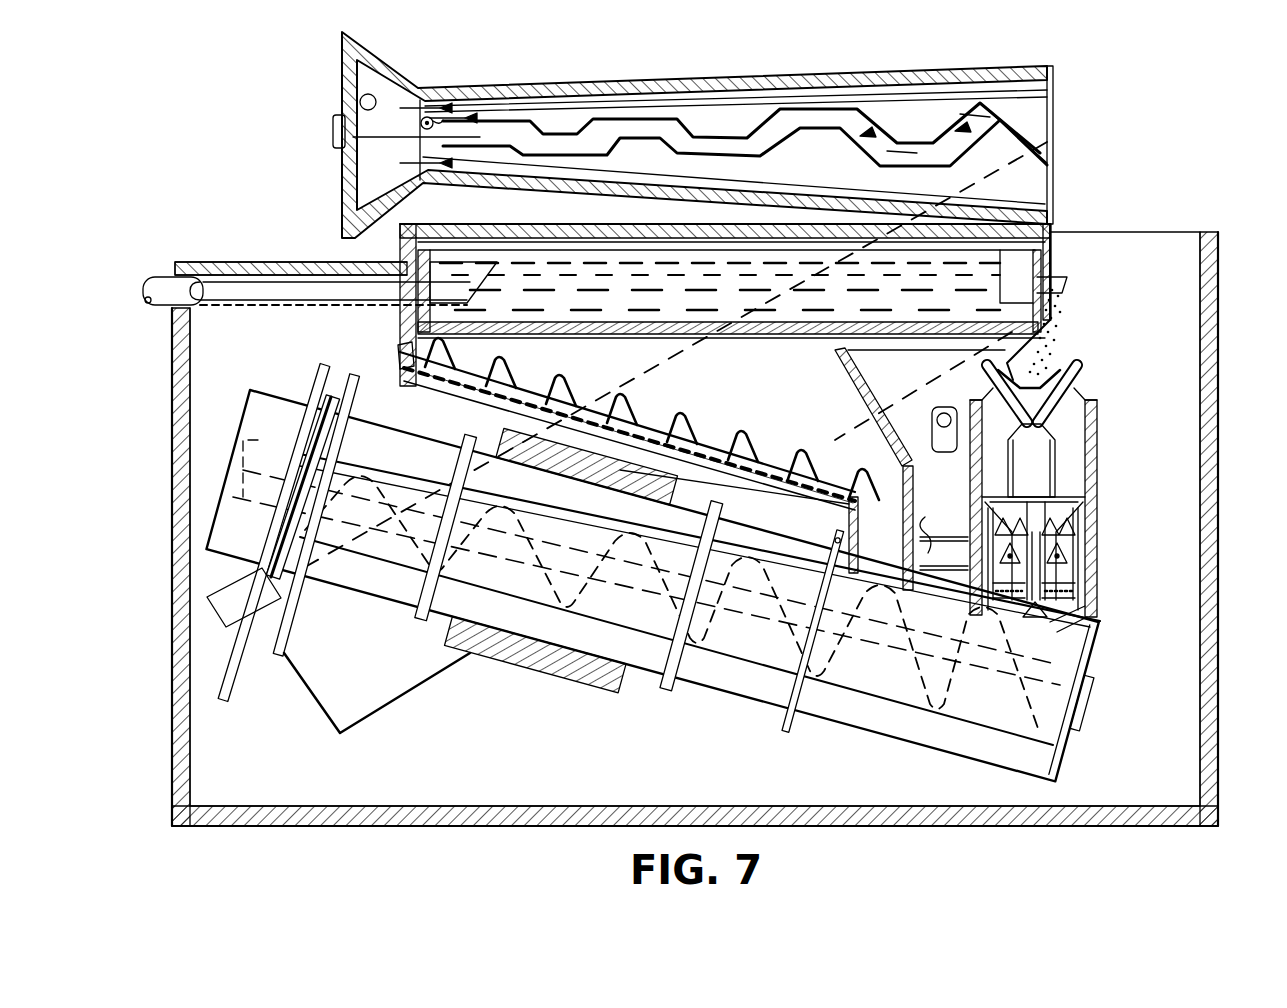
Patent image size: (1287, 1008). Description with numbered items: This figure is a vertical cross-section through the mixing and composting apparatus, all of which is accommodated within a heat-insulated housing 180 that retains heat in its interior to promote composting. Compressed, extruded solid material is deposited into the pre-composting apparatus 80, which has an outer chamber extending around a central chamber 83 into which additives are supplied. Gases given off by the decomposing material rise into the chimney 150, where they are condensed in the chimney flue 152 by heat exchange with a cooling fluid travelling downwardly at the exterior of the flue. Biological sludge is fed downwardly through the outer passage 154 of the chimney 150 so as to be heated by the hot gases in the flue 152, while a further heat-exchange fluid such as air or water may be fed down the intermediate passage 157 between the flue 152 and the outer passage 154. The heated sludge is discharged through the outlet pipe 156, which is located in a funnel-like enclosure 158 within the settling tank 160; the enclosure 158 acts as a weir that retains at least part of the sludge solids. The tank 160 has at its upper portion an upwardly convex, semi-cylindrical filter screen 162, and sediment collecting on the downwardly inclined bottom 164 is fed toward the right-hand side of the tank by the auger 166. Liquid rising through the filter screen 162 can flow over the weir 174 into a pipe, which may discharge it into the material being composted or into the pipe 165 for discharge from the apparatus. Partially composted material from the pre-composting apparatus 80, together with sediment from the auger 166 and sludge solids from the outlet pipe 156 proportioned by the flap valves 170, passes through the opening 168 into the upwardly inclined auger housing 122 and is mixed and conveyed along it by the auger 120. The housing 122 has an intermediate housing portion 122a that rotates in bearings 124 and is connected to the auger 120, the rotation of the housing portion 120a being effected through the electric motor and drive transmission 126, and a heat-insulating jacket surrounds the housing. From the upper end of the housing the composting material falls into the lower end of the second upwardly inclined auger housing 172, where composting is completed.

The pre-composting apparatus 80 is at (1071, 498).
The central chamber 83 is at (1043, 478).
The auger 120 is at (685, 587).
The housing portion 120a is at (720, 680).
The auger housing 122 is at (937, 737).
The intermediate housing portion 122a is at (493, 447).
The bearings 124 is at (430, 622).
The electric motor and drive transmission 126 is at (220, 707).
The chimney 150 is at (693, 134).
The chimney flue 152 is at (833, 115).
The outer passage 154 is at (535, 97).
The outlet pipe 156 is at (947, 407).
The intermediate passage 157 is at (570, 123).
The funnel-like enclosure 158 is at (838, 358).
The settling tank 160 is at (694, 305).
The filter screen 162 is at (497, 333).
The downwardly inclined bottom 164 is at (473, 425).
The pipe 165 is at (157, 308).
The auger 166 is at (760, 433).
The opening 168 is at (1073, 620).
The flap valves 170 is at (943, 531).
The second upwardly inclined auger housing 172 is at (370, 717).
The weir 174 is at (528, 268).
The heat-insulated housing 180 is at (1220, 297).